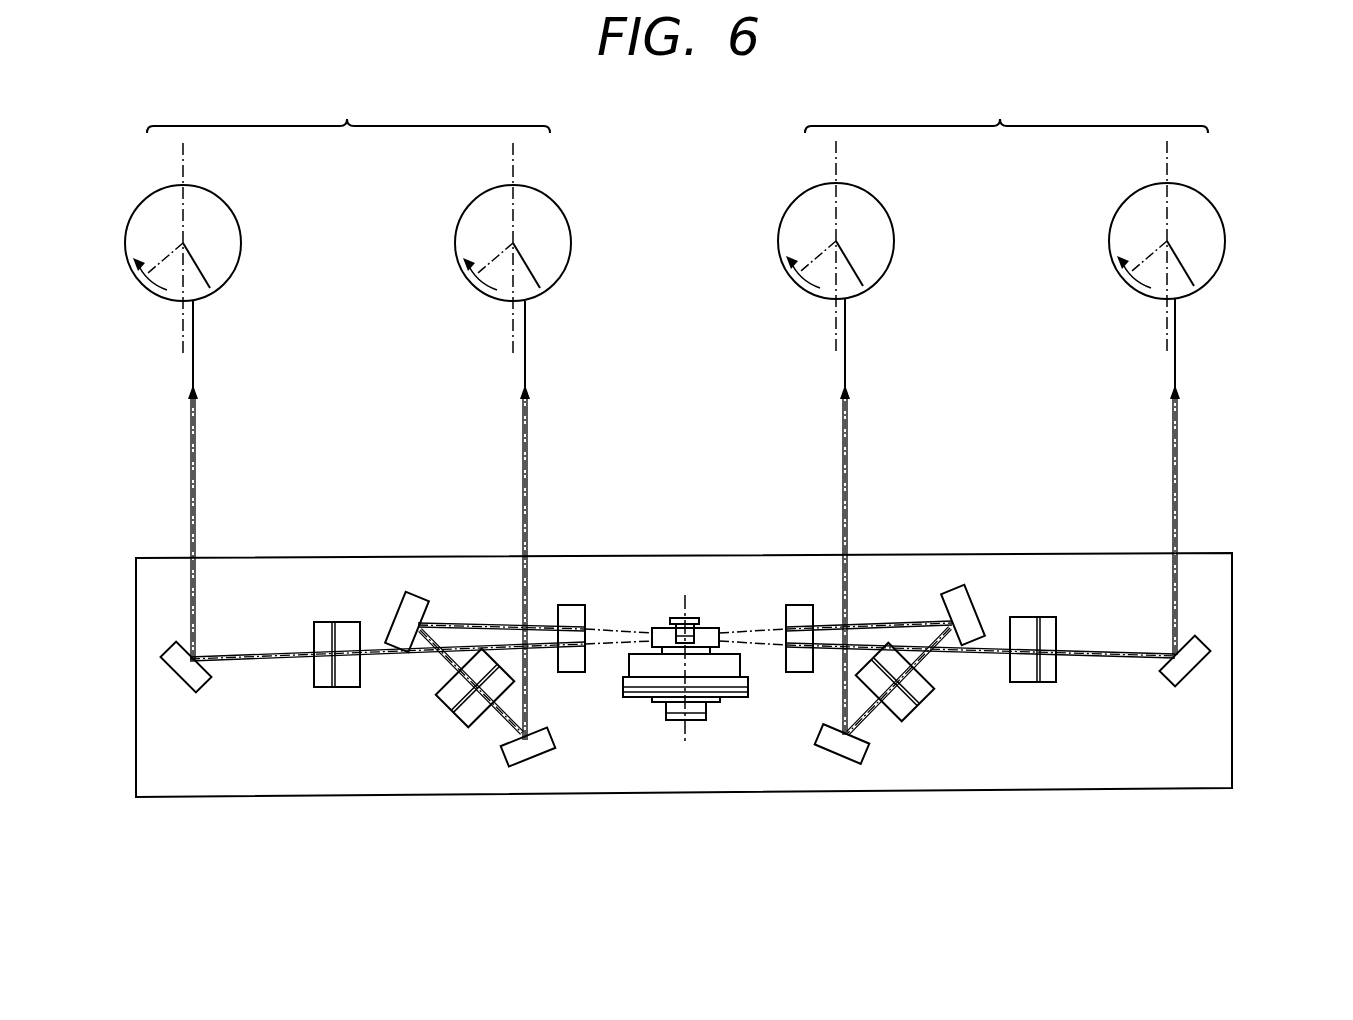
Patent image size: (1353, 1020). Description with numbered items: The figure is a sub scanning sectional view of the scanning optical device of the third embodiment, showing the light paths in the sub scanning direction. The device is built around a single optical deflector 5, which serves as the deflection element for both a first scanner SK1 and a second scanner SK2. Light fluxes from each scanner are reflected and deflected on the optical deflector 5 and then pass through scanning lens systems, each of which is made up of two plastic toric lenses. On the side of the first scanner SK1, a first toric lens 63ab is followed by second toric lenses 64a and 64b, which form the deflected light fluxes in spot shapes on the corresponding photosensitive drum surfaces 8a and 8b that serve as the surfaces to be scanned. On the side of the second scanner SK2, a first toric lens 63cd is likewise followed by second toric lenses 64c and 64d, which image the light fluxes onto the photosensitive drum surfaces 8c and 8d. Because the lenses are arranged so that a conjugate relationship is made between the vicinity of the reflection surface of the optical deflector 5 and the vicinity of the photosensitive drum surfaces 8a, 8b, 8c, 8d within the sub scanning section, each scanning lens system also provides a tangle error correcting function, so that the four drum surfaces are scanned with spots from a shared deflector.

The optical deflector 5 is at (725, 668).
The photosensitive drum surface 8a is at (1202, 273).
The photosensitive drum surface 8b is at (871, 273).
The photosensitive drum surface 8c is at (548, 275).
The photosensitive drum surface 8d is at (218, 275).
The first toric lens 63ab is at (797, 608).
The first toric lens 63cd is at (572, 608).
The second toric lens 64a is at (1027, 673).
The second toric lens 64b is at (913, 695).
The second toric lens 64c is at (453, 700).
The second toric lens 64d is at (327, 680).
The first scanner SK1 is at (1006, 112).
The second scanner SK2 is at (348, 113).